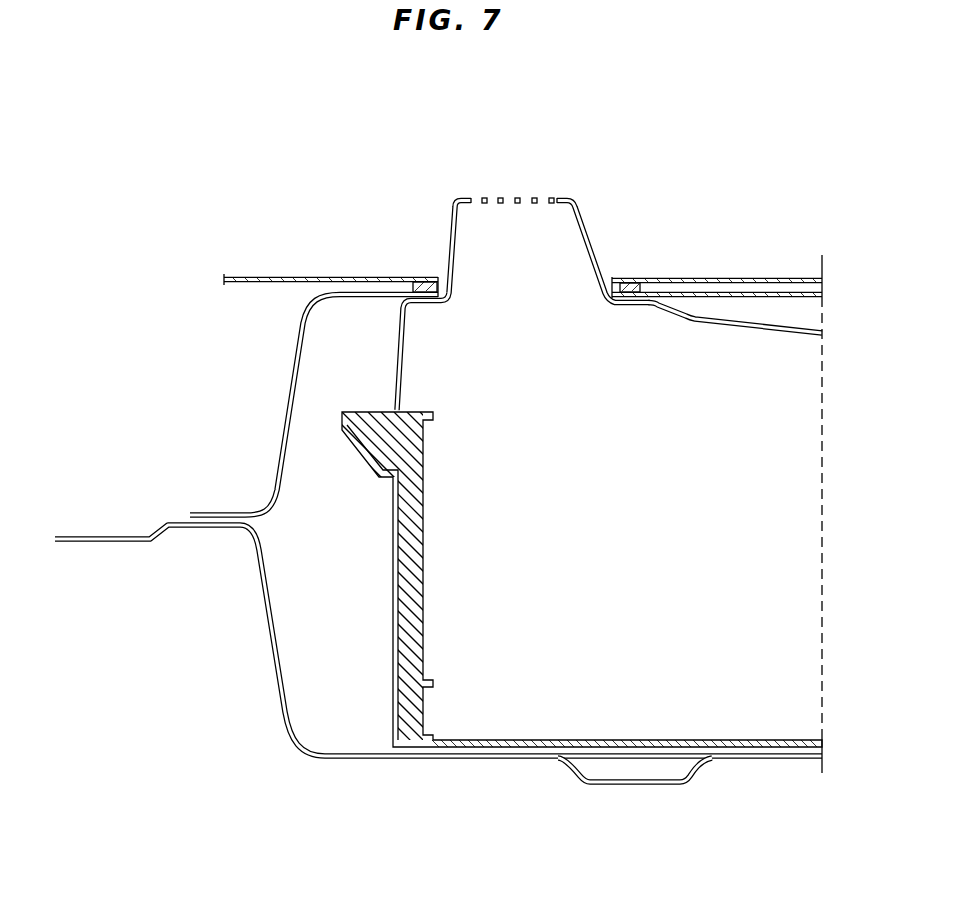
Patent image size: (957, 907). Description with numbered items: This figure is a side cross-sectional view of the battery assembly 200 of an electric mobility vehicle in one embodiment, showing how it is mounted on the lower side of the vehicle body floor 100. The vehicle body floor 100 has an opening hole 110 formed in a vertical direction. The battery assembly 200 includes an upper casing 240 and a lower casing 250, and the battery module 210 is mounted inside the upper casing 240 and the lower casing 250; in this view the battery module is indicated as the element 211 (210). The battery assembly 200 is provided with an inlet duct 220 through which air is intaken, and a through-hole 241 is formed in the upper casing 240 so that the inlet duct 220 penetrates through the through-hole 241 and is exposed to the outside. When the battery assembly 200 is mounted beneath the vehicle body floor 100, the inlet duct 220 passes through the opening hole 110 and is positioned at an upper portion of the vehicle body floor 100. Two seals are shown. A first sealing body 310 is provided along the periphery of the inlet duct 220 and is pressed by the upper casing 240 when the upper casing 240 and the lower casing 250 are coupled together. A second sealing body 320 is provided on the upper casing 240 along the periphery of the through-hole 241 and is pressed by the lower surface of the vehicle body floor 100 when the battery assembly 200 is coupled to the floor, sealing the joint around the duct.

The vehicle body floor 100 is at (280, 278).
The opening hole 110 is at (450, 268).
The battery assembly 200 is at (438, 653).
The battery module 210 is at (740, 240).
The inner panel flange 211 is at (758, 327).
The inlet duct 220 is at (523, 244).
The upper casing 240 is at (283, 447).
The through-hole 241 is at (607, 288).
The lower casing 250 is at (275, 675).
The first sealing body 310 is at (683, 310).
The second sealing body 320 is at (680, 292).